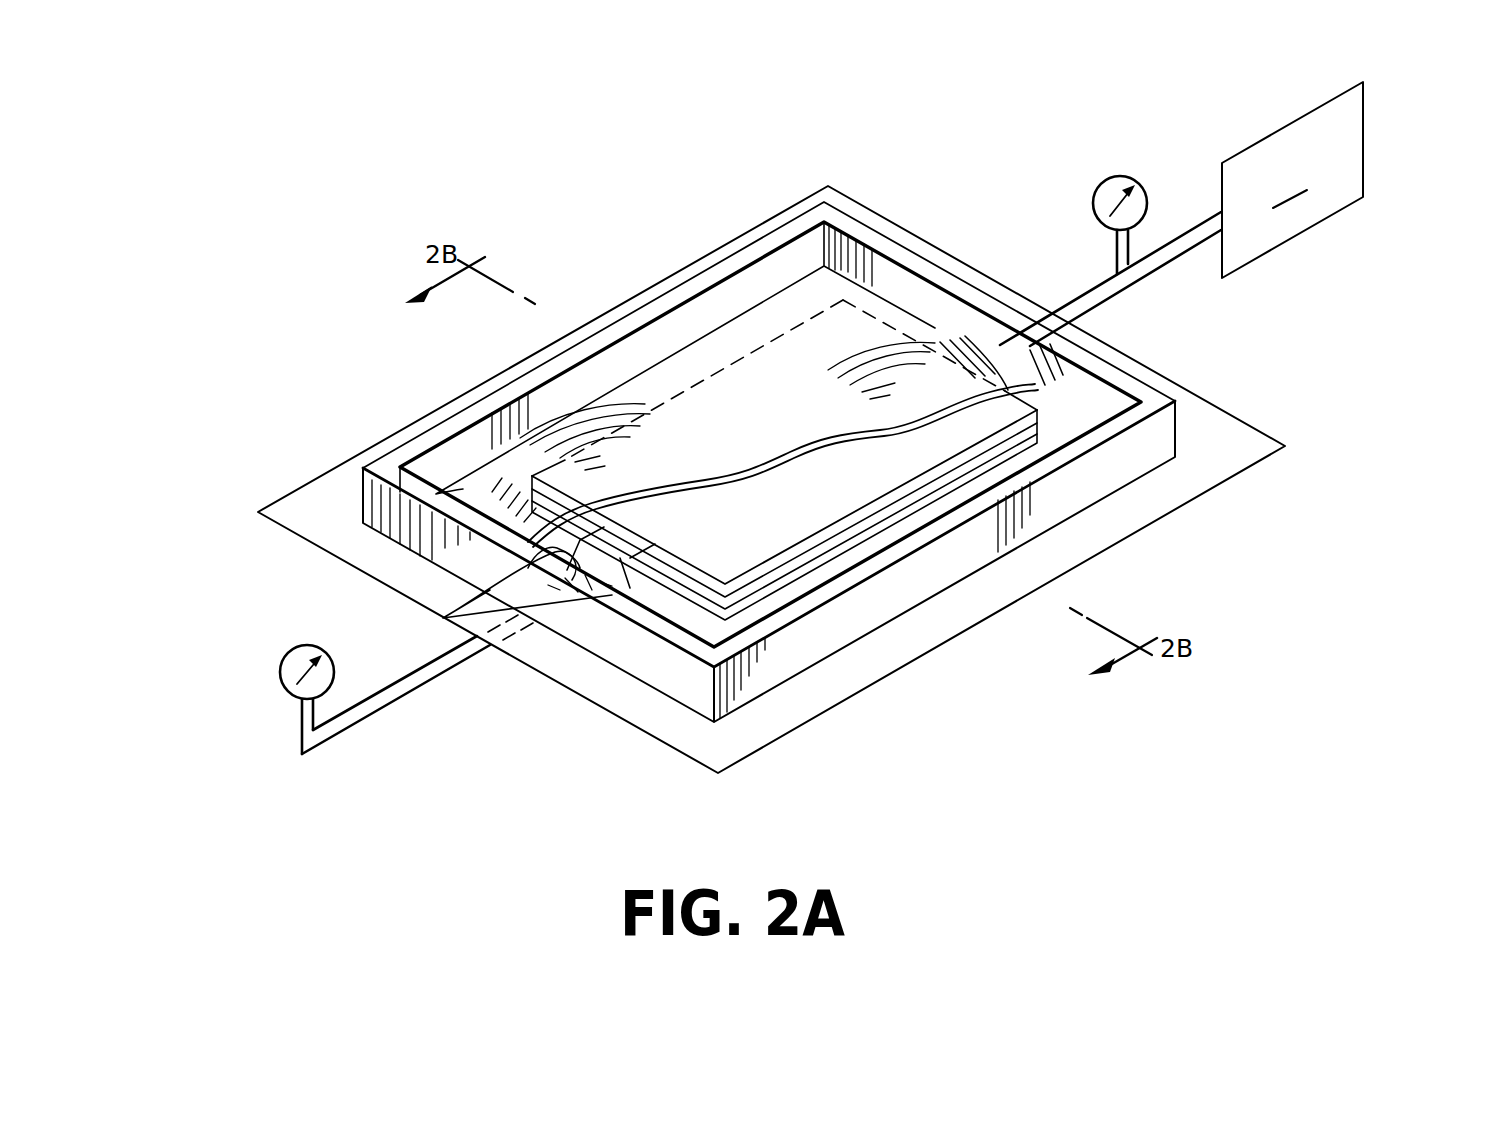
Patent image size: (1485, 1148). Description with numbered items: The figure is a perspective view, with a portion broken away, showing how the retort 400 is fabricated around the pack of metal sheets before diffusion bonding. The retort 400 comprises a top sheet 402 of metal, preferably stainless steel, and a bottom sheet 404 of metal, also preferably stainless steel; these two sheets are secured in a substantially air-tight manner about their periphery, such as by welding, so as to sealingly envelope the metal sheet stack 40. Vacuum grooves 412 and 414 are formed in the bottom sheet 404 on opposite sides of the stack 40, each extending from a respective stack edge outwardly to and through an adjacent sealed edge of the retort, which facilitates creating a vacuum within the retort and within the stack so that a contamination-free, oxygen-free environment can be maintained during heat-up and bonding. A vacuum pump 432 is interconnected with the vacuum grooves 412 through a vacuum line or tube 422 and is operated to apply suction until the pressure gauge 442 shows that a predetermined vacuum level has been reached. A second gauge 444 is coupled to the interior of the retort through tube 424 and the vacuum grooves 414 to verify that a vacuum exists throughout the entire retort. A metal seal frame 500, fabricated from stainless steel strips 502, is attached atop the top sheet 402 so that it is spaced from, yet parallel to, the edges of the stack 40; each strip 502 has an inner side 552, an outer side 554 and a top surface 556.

The metal sheet stack 40 is at (790, 512).
The retort 400 is at (235, 405).
The top sheet 402 is at (325, 512).
The bottom sheet 404 is at (1078, 427).
The vacuum grooves 412 is at (1005, 362).
The vacuum grooves 414 is at (443, 618).
The vacuum line or tube 422 is at (1108, 284).
The tube 424 is at (410, 687).
The vacuum pump 432 is at (1365, 170).
The pressure gauge 442 is at (1122, 176).
The second gauge 444 is at (279, 665).
The metal seal frame 500 is at (1124, 459).
The stainless steel strips 502 is at (672, 635).
The inner side 552 is at (905, 285).
The outer side 554 is at (827, 642).
The top surface 556 is at (738, 262).